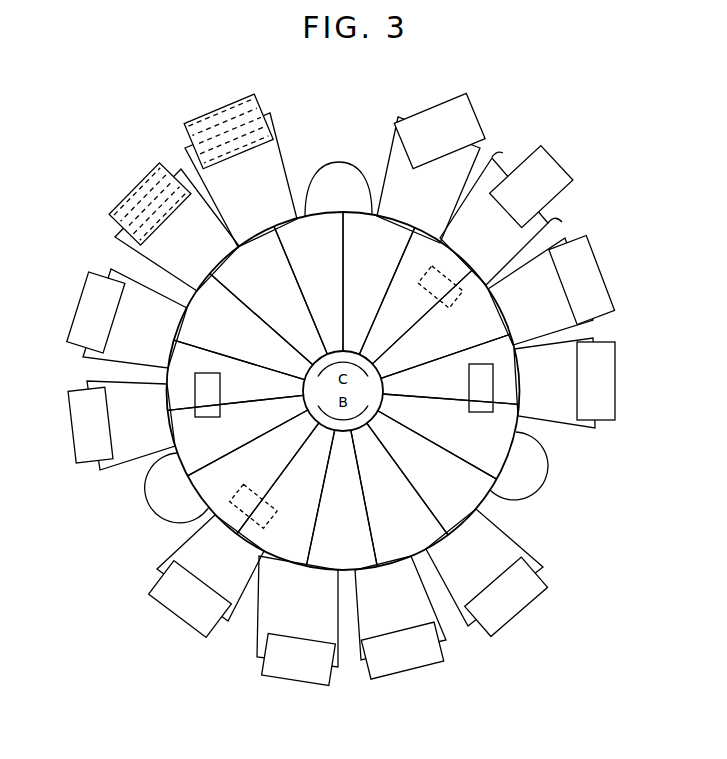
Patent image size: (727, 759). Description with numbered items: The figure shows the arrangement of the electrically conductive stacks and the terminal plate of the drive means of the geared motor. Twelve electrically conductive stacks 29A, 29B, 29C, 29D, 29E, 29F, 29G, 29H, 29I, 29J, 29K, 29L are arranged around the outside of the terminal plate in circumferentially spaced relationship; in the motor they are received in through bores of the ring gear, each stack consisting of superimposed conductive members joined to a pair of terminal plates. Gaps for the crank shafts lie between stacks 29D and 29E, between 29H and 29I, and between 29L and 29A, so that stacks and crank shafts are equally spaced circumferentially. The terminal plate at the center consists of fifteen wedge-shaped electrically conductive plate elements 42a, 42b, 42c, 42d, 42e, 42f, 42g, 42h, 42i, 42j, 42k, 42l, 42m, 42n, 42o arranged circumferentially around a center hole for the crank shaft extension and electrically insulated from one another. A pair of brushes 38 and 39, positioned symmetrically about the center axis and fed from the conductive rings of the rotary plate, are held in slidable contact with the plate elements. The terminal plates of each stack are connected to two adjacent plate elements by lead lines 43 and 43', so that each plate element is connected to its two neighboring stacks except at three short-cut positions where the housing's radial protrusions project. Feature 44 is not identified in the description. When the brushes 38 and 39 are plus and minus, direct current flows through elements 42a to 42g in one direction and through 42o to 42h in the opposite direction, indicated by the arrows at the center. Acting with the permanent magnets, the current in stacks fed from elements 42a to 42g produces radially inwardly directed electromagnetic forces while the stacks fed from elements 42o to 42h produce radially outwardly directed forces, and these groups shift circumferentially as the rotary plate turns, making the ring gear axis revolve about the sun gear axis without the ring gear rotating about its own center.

The electrically conductive stack 29A is at (487, 573).
The electrically conductive stack 29B is at (400, 617).
The electrically conductive stack 29C is at (297, 621).
The electrically conductive stack 29D is at (206, 576).
The electrically conductive stack 29E is at (121, 425).
The electrically conductive stack 29F is at (127, 318).
The electrically conductive stack 29G is at (140, 188).
The electrically conductive stack 29H is at (230, 112).
The electrically conductive stack 29I is at (431, 168).
The electrically conductive stack 29J is at (506, 215).
The electrically conductive stack 29K is at (551, 290).
The electrically conductive stack 29L is at (564, 383).
The brush 38 is at (493, 381).
The brush 39 is at (197, 381).
The wedge-shaped electrically conductive plate element 42a is at (452, 442).
The wedge-shaped electrically conductive plate element 42b is at (424, 486).
The wedge-shaped electrically conductive plate element 42c is at (377, 514).
The wedge-shaped electrically conductive plate element 42d is at (320, 540).
The wedge-shaped electrically conductive plate element 42e is at (274, 500).
The wedge-shaped electrically conductive plate element 42f is at (244, 462).
The wedge-shaped electrically conductive plate element 42g is at (197, 442).
The wedge-shaped electrically conductive plate element 42h is at (234, 390).
The wedge-shaped electrically conductive plate element 42i is at (207, 340).
The wedge-shaped electrically conductive plate element 42j is at (242, 294).
The wedge-shaped electrically conductive plate element 42k is at (294, 252).
The wedge-shaped electrically conductive plate element 42l is at (350, 252).
The wedge-shaped electrically conductive plate element 42m is at (385, 314).
The wedge-shaped electrically conductive plate element 42n is at (418, 344).
The wedge-shaped electrically conductive plate element 42o is at (413, 390).
The lead line 43 is at (507, 136).
The lead line 43' is at (578, 212).
The loading lobe 44 is at (339, 160).